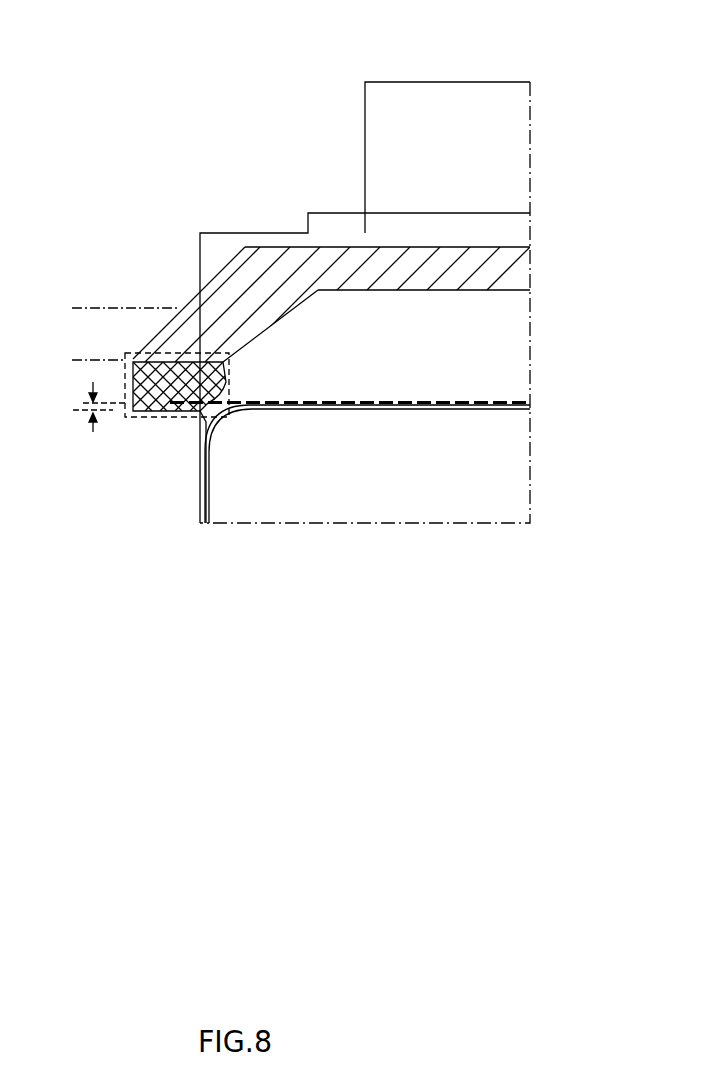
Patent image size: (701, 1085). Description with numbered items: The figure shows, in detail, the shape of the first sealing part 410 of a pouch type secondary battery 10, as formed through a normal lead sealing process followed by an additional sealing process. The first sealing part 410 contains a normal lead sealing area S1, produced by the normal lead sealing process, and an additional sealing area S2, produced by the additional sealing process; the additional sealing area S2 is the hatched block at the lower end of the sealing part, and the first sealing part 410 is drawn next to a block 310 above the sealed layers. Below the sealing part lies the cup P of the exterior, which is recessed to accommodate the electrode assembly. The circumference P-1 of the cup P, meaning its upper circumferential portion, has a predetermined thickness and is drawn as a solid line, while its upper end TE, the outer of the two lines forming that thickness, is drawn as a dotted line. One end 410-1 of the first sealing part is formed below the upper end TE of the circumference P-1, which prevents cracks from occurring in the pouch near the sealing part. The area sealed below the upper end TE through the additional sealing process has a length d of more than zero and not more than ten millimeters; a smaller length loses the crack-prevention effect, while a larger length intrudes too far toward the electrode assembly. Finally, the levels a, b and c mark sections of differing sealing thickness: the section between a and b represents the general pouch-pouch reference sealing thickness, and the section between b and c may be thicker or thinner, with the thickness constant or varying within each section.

The pouch type secondary battery 10 is at (68, 65).
The support member 310 is at (446, 100).
The first sealing part 410 is at (340, 368).
The one end of the first sealing part 410-1 is at (205, 423).
The normal lead sealing area S1 is at (515, 268).
The additional sealing area S2 is at (225, 380).
The upper end of the circumference of the cup TE is at (507, 397).
The cup P is at (512, 483).
The circumference of the cup P-1 is at (497, 407).
The section boundary a is at (116, 308).
The section boundary b is at (89, 359).
The section boundary c is at (89, 409).
The length d is at (93, 418).